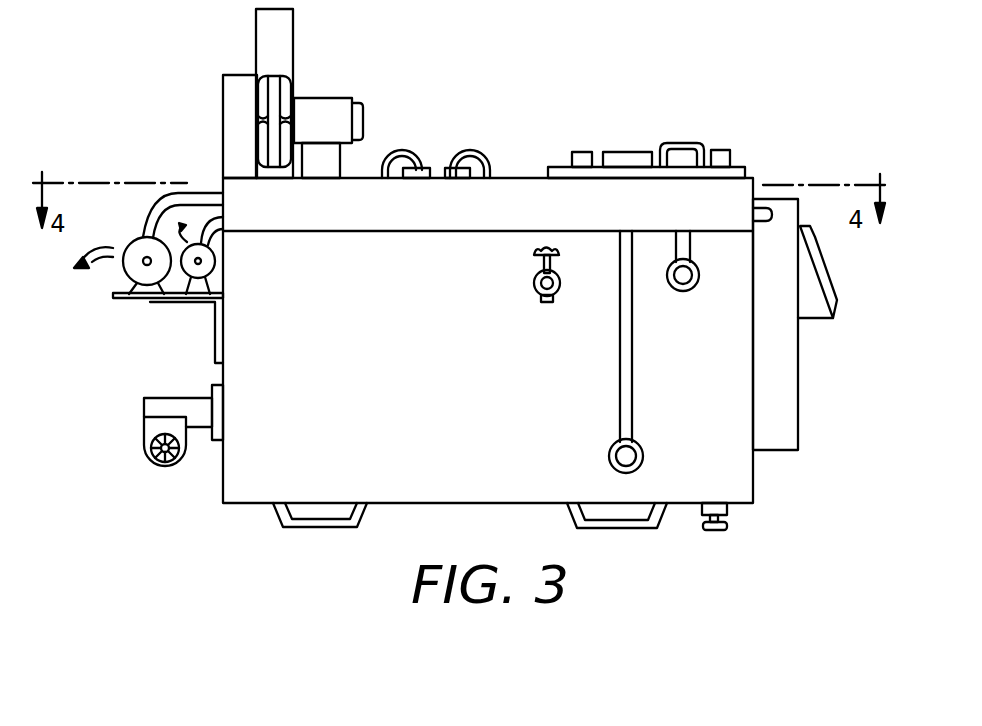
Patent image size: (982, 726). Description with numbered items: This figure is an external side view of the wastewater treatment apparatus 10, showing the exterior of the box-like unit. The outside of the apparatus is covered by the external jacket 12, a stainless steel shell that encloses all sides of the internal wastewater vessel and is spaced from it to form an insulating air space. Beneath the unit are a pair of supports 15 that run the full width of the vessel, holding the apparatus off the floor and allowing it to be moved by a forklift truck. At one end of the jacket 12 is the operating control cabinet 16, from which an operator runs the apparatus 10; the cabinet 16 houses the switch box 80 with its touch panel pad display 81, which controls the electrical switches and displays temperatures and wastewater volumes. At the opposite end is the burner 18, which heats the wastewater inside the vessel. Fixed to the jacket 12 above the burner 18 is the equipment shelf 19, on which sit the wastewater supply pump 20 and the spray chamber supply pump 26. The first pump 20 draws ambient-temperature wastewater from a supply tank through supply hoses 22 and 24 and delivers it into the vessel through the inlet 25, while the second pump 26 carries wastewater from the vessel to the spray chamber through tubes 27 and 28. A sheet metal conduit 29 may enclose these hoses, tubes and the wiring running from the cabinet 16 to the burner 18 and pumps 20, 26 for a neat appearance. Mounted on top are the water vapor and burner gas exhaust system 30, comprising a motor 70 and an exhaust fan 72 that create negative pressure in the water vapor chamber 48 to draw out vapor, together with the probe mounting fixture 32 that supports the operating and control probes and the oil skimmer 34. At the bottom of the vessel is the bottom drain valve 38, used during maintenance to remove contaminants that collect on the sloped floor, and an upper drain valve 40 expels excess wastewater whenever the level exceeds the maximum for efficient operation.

The wastewater treatment apparatus 10 is at (364, 390).
The external jacket 12 is at (753, 478).
The supports 15 is at (277, 514).
The operating control cabinet 16 is at (777, 197).
The burner 18 is at (180, 455).
The equipment shelf 19 is at (150, 300).
The wastewater supply pump 20 is at (133, 243).
The supply hose 22 is at (110, 263).
The supply hose 24 is at (197, 193).
The inlet 25 is at (692, 287).
The spray chamber supply pump 26 is at (193, 278).
The tube 27 is at (634, 345).
The tube 28 is at (402, 152).
The sheet metal conduit 29 is at (517, 196).
The water vapor and burner gas exhaust system 30 is at (316, 90).
The probe mounting fixture 32 is at (614, 151).
The oil skimmer 34 is at (724, 150).
The bottom drain valve 38 is at (728, 514).
The upper drain valve 40 is at (533, 286).
The water vapor chamber 48 is at (645, 452).
The motor 70 is at (342, 107).
The exhaust fan 72 is at (287, 88).
The switch box 80 is at (818, 318).
The touch panel pad display 81 is at (832, 272).